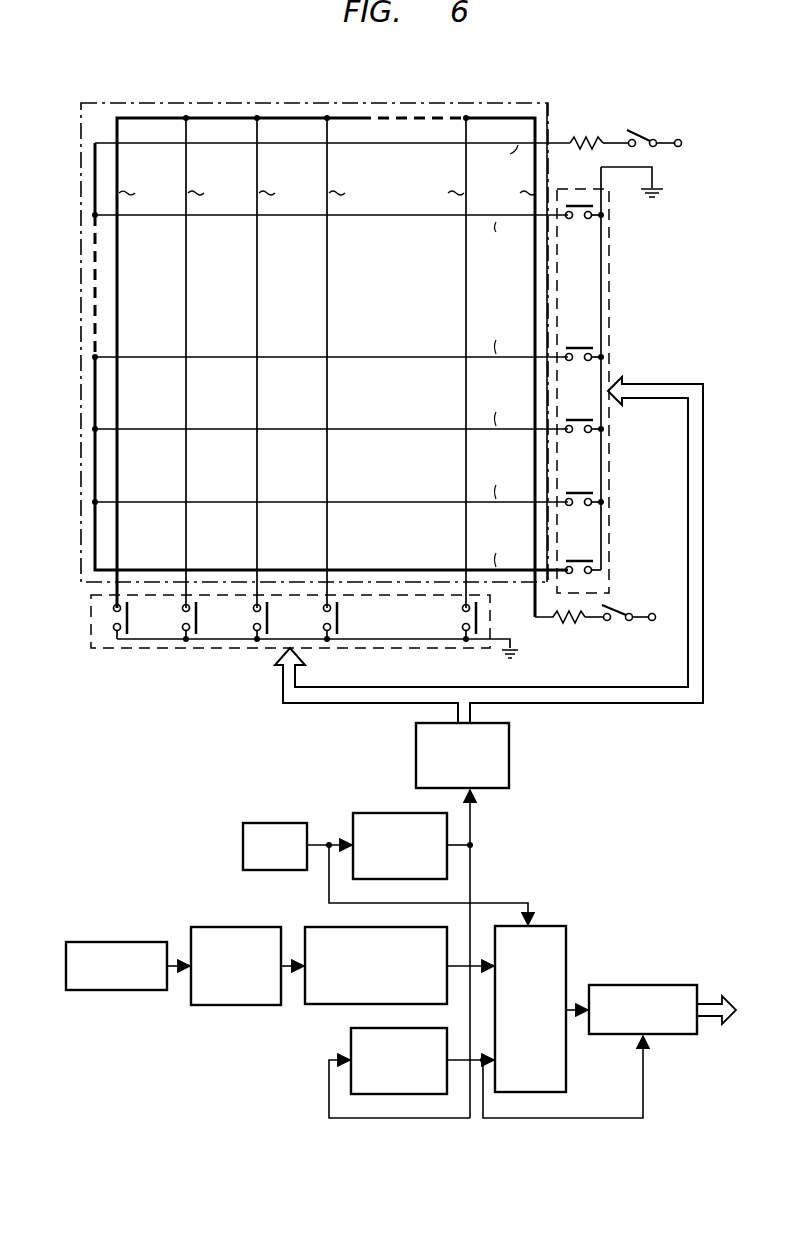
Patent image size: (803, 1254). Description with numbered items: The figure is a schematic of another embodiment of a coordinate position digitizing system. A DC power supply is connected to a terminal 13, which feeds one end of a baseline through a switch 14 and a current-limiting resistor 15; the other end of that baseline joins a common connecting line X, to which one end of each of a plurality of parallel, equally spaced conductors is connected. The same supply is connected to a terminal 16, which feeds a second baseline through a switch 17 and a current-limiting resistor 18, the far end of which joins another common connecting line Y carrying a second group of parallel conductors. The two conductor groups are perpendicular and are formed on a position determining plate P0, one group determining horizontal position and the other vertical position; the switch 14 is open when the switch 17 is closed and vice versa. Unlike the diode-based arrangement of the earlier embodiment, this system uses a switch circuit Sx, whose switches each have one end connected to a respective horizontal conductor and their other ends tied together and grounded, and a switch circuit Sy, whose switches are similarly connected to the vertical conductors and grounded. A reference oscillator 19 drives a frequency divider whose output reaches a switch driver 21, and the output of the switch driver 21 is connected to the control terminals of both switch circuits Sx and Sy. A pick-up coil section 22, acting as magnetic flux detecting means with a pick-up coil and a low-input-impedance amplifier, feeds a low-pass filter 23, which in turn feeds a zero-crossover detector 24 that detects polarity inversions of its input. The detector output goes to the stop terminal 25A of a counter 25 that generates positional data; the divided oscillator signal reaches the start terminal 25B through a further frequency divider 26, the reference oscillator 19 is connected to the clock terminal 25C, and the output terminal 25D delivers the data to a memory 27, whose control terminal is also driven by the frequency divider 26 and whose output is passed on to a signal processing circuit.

The terminal 13 is at (652, 624).
The switch 14 is at (617, 624).
The current-limiting resistor 15 is at (568, 624).
The terminal 16 is at (677, 135).
The switch 17 is at (634, 134).
The current-limiting resistor 18 is at (586, 135).
The reference oscillator 19 is at (268, 823).
The switch driver 21 is at (511, 750).
The pick-up coil section 22 is at (112, 942).
The low-pass filter 23 is at (235, 927).
The zero-crossover detector 24 is at (311, 927).
The counter 25 is at (542, 994).
The stop terminal 25A is at (515, 968).
The start terminal 25B is at (515, 1060).
The clock terminal 25C is at (528, 942).
The output terminal 25D is at (545, 1010).
The frequency divider 26 is at (351, 1035).
The memory 27 is at (641, 985).
The position determining plate P0 is at (143, 94).
The common connecting line X is at (230, 122).
The common connecting line Y is at (106, 403).
The switch circuit Sx is at (150, 651).
The switch circuit Sy is at (611, 300).